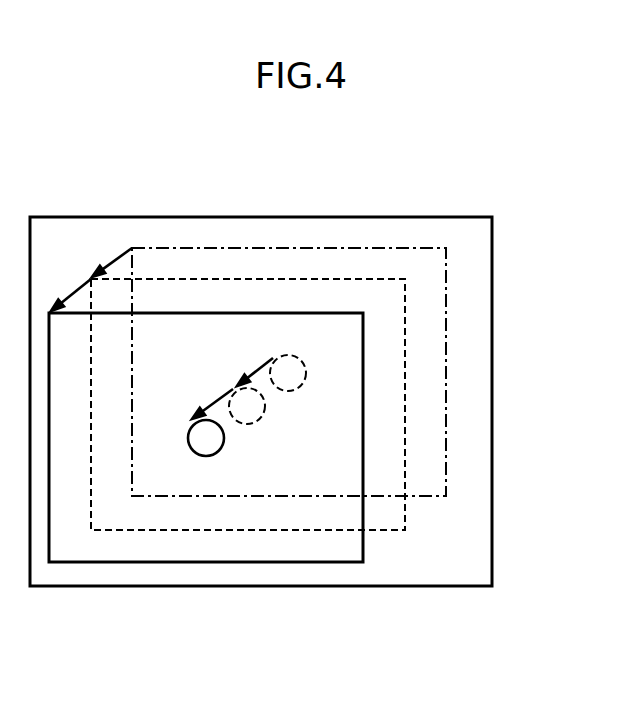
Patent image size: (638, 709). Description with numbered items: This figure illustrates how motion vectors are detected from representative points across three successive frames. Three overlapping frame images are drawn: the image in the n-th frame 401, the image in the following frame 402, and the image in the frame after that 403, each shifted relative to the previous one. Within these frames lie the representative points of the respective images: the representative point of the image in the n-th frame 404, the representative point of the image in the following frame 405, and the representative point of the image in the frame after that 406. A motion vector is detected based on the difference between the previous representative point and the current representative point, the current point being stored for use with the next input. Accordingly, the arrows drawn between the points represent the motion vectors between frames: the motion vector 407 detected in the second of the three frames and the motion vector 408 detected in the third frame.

The image in the n-th frame 401 is at (447, 348).
The image in the (n+1)th frame 402 is at (405, 420).
The image in the (n+2)th frame 403 is at (298, 562).
The representative point of an image in the n-th frame 404 is at (306, 373).
The representative point of an image in the (n+1)th frame 405 is at (260, 419).
The representative point of an image in the (n+2)th frame 406 is at (220, 450).
The motion vector 407 is at (238, 382).
The motion vector 408 is at (213, 395).